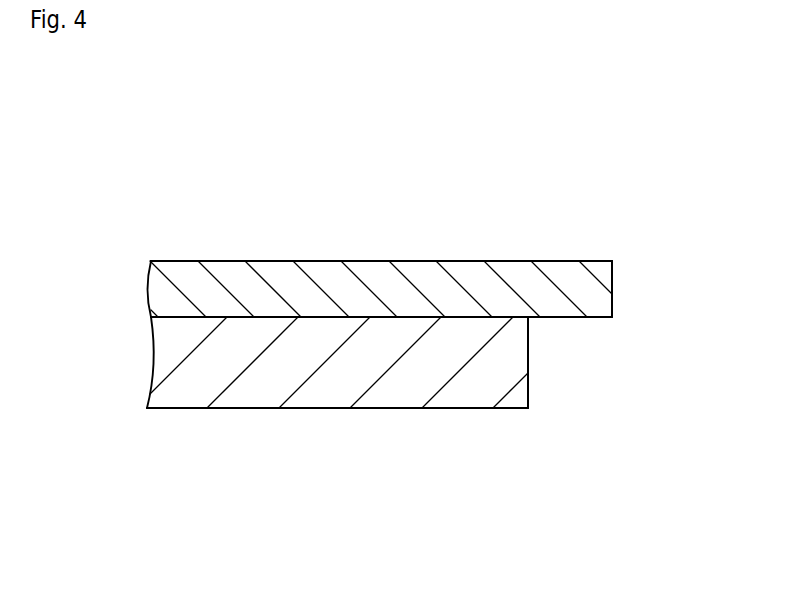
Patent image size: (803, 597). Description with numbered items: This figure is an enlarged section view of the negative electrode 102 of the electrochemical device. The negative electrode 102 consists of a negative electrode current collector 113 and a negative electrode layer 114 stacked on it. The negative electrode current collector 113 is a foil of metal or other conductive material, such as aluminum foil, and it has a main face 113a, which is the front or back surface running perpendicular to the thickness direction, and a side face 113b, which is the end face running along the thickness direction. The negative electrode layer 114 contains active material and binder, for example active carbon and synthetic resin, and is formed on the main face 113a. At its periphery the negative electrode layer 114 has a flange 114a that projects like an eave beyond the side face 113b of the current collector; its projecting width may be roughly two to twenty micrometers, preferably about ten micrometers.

The negative electrode 102 is at (625, 209).
The negative electrode current collector 113 is at (390, 401).
The main face 113a is at (303, 318).
The side face 113b is at (528, 390).
The negative electrode layer 114 is at (472, 278).
The flange 114a is at (539, 321).